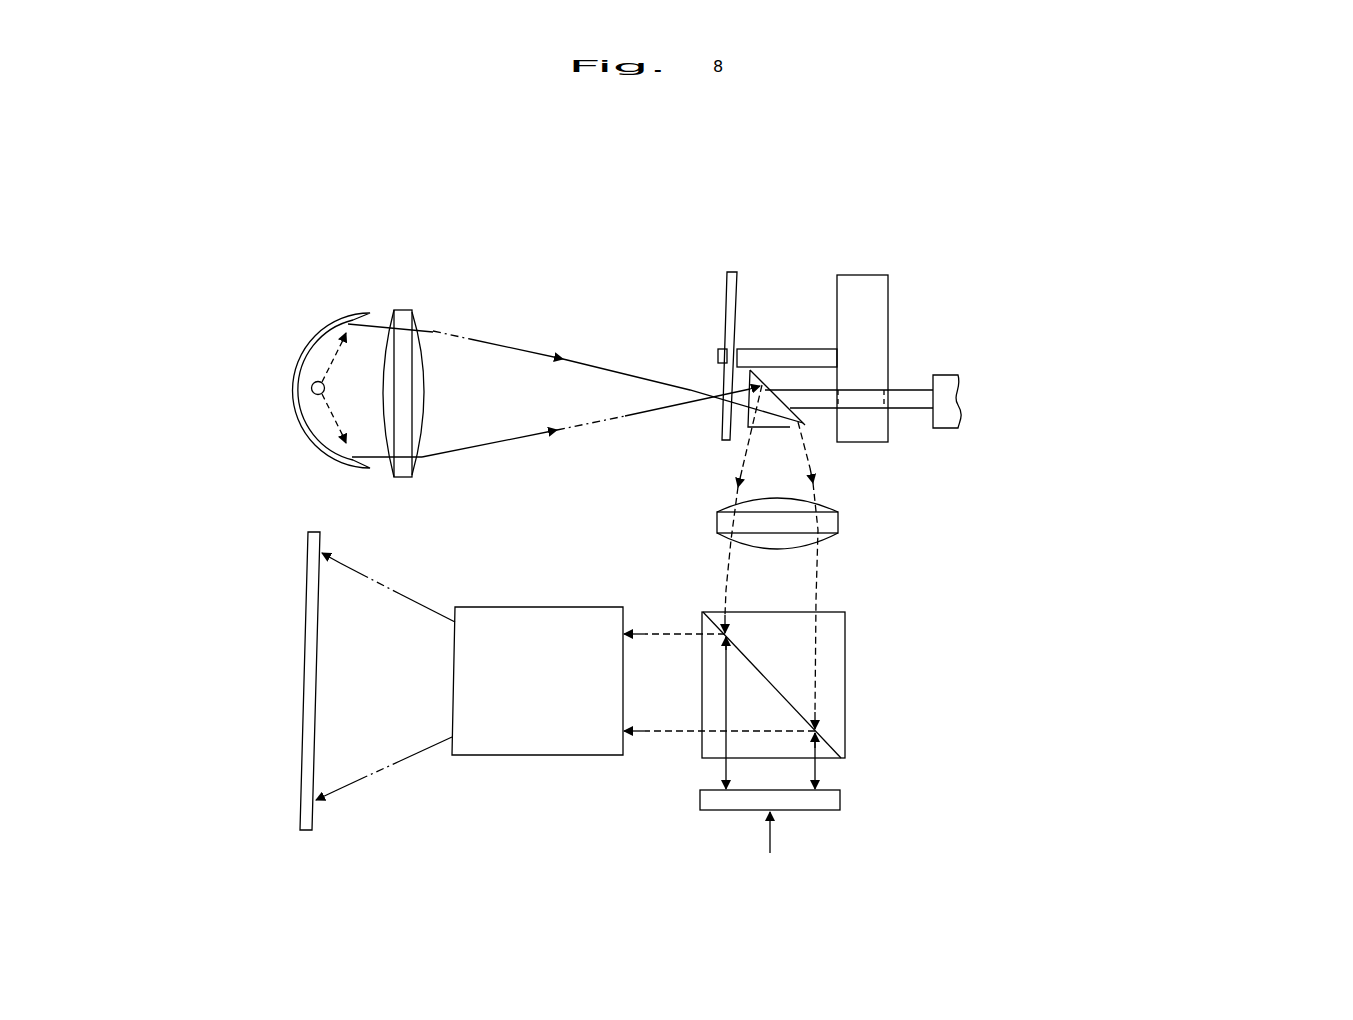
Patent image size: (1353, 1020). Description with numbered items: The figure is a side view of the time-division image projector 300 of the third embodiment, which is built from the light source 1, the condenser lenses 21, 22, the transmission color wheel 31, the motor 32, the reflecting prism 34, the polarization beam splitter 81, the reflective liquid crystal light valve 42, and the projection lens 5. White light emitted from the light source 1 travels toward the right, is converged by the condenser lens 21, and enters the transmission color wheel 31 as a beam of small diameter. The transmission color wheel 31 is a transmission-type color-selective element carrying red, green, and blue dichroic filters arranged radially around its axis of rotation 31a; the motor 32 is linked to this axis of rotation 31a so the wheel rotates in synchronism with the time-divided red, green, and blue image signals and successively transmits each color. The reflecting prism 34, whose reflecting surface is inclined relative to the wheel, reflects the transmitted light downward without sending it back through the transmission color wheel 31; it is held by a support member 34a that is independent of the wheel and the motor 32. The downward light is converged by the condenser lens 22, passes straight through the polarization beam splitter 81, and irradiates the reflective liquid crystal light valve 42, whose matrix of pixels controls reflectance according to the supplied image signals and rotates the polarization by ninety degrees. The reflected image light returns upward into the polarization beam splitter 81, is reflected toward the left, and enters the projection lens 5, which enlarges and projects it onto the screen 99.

The light source 1 is at (313, 348).
The condenser lens 21 is at (412, 308).
The transmission color wheel 31 is at (735, 270).
The axis of rotation 31a is at (786, 355).
The motor 32 is at (888, 312).
The reflecting prism 34 is at (805, 425).
The support member 34a is at (958, 401).
The condenser lens 22 is at (838, 526).
The polarization beam splitter 81 is at (845, 665).
The reflective liquid crystal light valve 42 is at (840, 797).
The projection lens 5 is at (582, 746).
The screen 99 is at (303, 667).
The time-division image projector 300 is at (1002, 285).